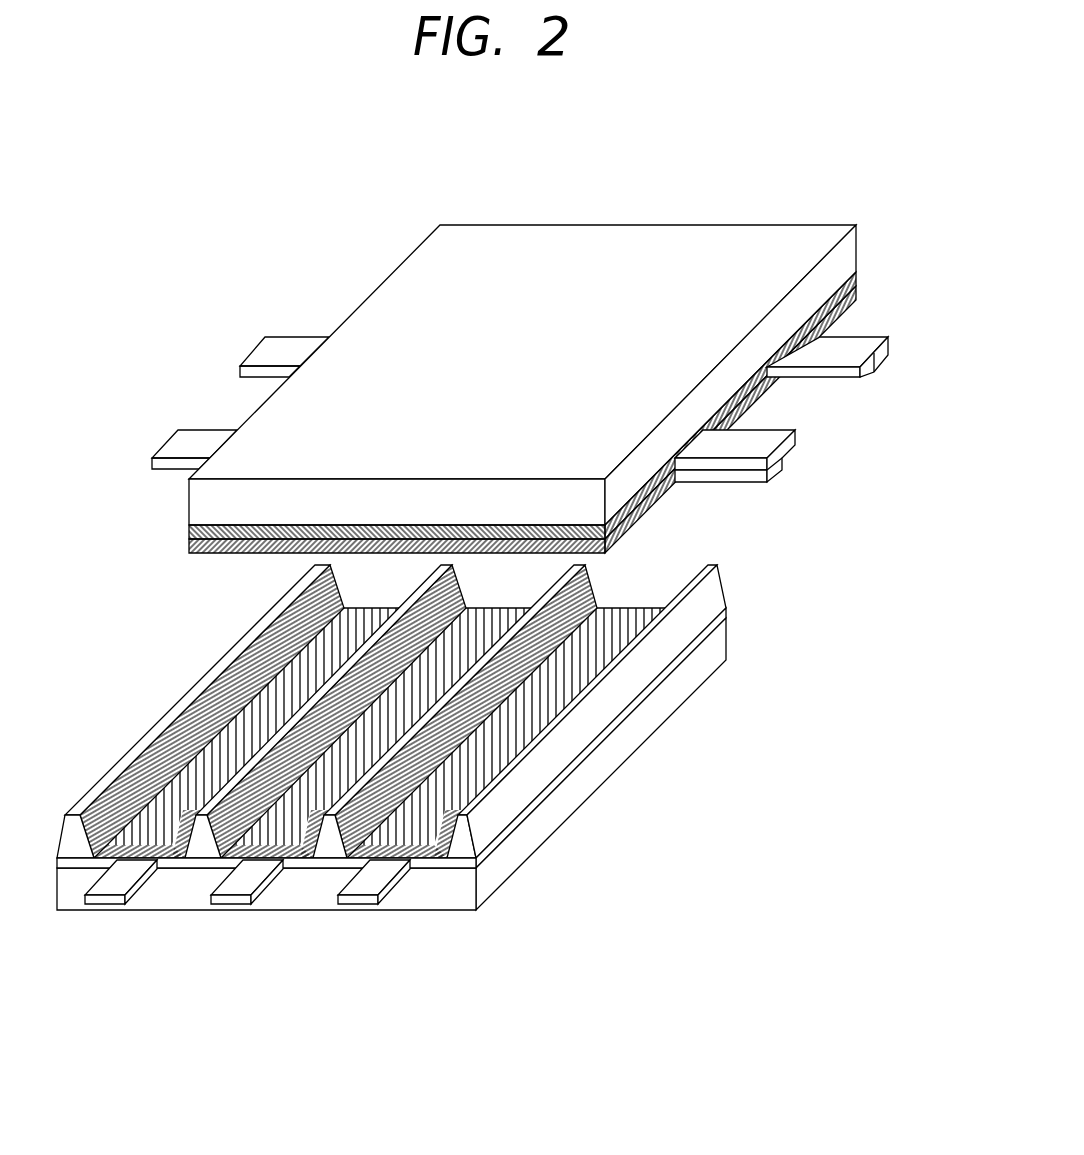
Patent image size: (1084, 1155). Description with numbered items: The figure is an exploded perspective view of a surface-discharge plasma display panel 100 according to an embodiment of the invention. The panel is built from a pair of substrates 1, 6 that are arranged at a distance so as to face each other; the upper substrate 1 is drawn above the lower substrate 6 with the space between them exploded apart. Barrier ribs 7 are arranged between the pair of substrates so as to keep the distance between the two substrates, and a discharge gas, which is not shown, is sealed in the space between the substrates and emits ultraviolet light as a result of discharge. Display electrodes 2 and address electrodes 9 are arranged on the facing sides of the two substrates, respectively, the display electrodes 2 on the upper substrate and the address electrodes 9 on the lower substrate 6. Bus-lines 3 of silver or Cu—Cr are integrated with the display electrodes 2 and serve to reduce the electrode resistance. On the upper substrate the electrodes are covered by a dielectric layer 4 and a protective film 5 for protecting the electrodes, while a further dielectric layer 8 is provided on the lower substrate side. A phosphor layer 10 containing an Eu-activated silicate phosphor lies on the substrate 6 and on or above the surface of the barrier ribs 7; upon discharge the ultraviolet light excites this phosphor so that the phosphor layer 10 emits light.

The plasma display panel 100 is at (813, 136).
The substrate 1 is at (438, 256).
The display electrodes 2 is at (827, 374).
The bus-lines 3 is at (888, 344).
The dielectric layer 4 is at (188, 536).
The protective film 5 is at (208, 554).
The substrate 6 is at (625, 747).
The barrier ribs 7 is at (717, 597).
The dielectric layer 8 is at (494, 845).
The address electrodes 9 is at (364, 888).
The phosphor layer 10 is at (162, 862).